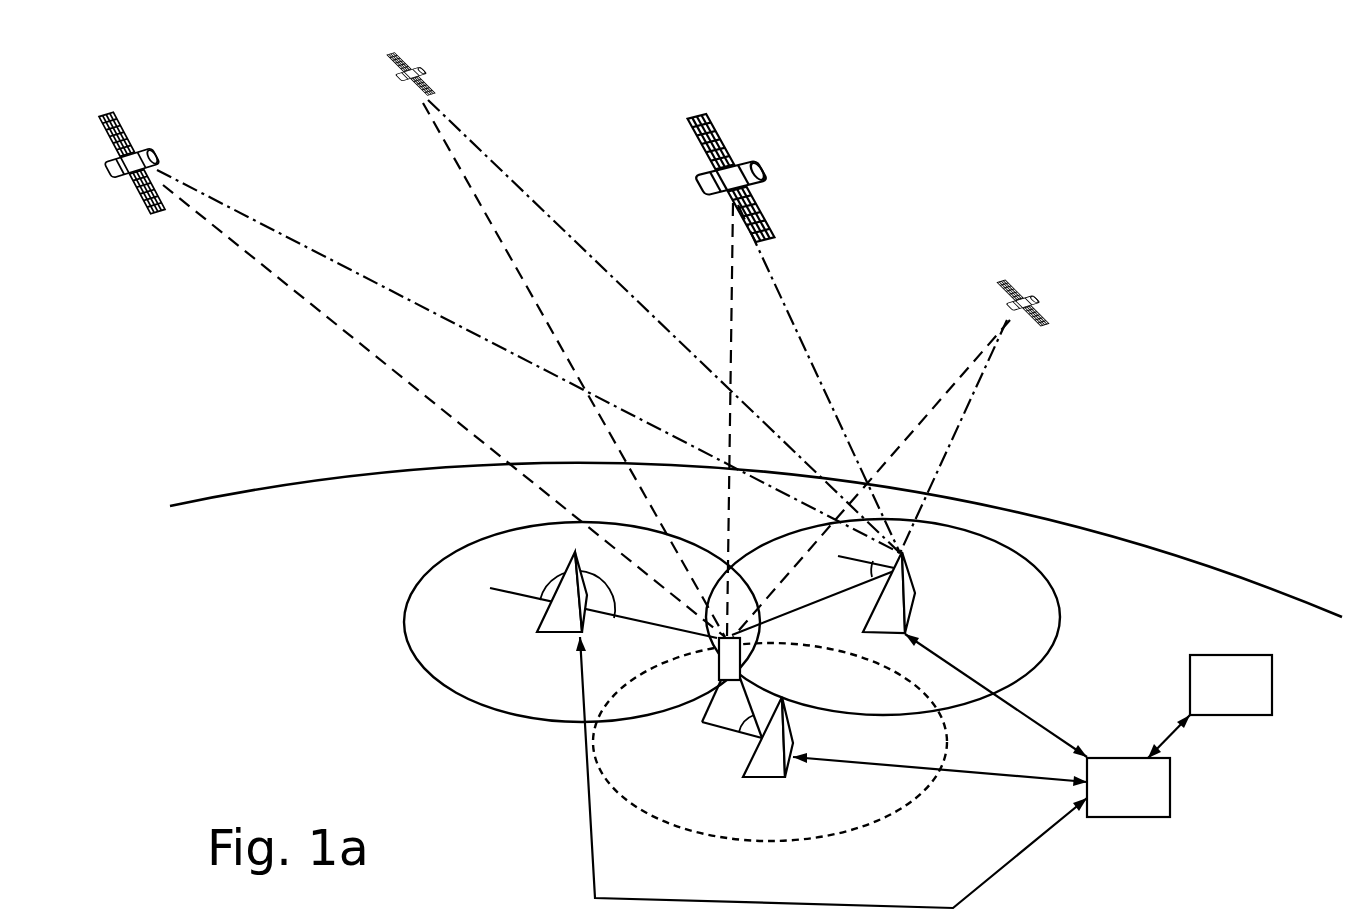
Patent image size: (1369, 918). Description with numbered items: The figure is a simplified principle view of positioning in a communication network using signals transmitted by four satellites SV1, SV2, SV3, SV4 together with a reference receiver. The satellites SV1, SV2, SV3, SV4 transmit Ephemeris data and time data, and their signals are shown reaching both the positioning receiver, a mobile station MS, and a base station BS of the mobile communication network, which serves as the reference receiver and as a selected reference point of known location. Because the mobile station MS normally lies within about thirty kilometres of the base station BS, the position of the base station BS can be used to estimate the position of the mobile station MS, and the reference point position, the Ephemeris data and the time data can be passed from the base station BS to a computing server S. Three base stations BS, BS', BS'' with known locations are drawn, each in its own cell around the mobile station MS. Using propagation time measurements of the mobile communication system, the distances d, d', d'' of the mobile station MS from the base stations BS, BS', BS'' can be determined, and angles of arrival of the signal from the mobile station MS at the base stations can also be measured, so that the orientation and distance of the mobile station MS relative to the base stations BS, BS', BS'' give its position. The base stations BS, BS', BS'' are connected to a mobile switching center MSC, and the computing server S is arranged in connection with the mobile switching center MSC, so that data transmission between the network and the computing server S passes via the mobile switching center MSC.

The satellite SV1 is at (118, 154).
The satellite SV2 is at (410, 57).
The satellite SV3 is at (731, 170).
The satellite SV4 is at (1030, 282).
The base station BS is at (936, 616).
The base station BS' is at (544, 631).
The base station BS'' is at (772, 797).
The mobile station MS is at (742, 660).
The mobile switching center MSC is at (1170, 770).
The computing server S is at (1272, 675).
The distance d is at (815, 602).
The distance d' is at (603, 635).
The distance d'' is at (712, 736).